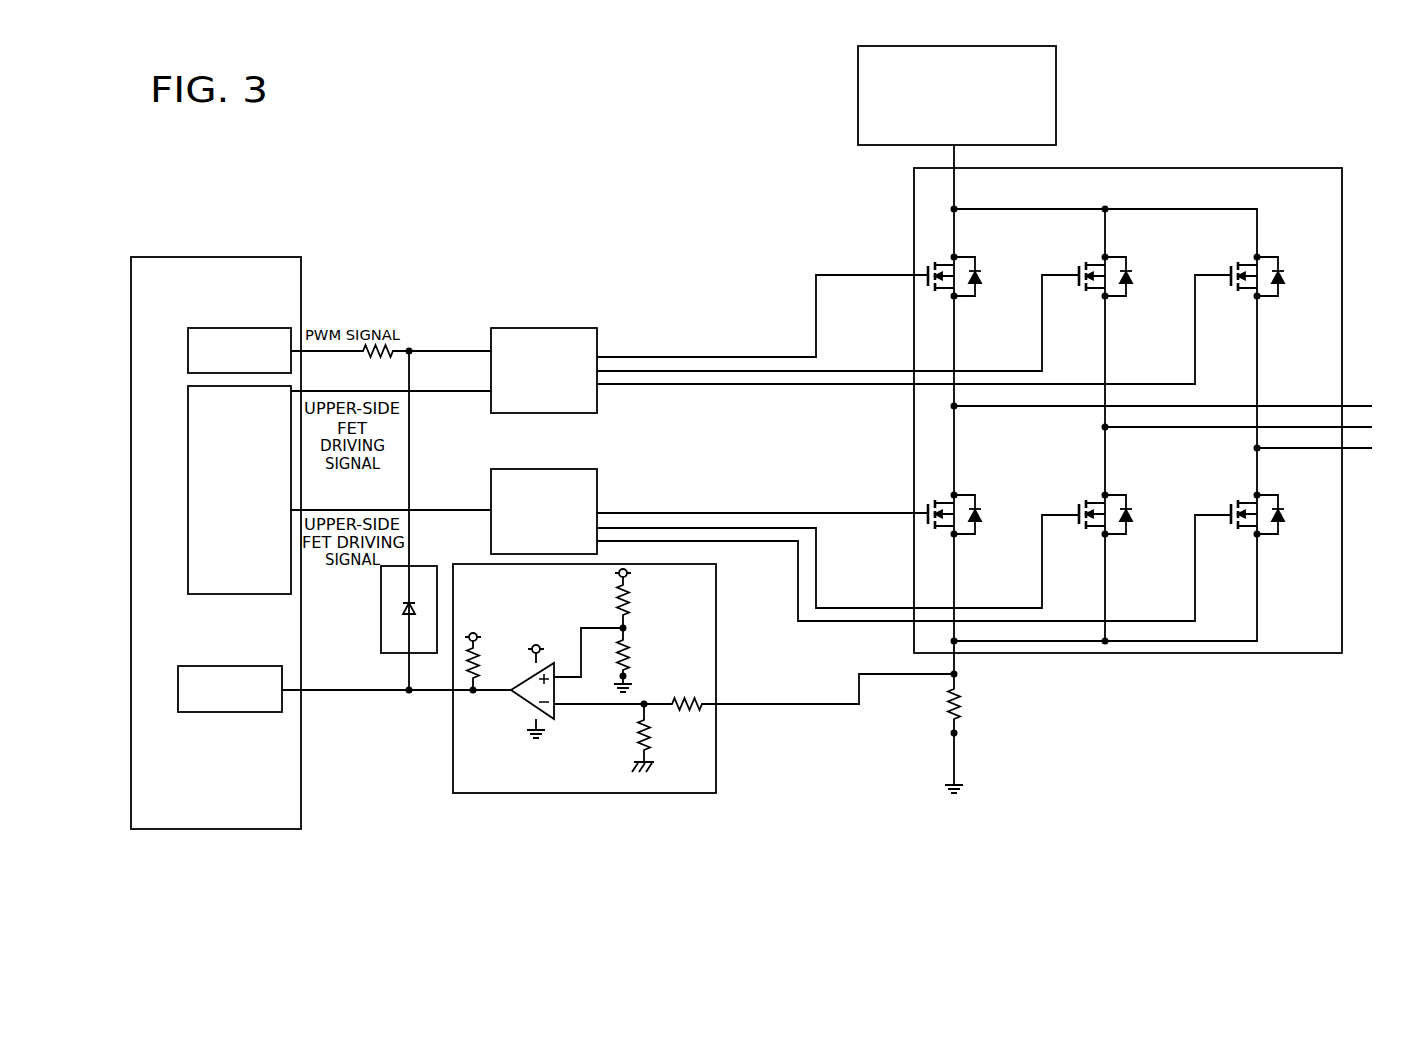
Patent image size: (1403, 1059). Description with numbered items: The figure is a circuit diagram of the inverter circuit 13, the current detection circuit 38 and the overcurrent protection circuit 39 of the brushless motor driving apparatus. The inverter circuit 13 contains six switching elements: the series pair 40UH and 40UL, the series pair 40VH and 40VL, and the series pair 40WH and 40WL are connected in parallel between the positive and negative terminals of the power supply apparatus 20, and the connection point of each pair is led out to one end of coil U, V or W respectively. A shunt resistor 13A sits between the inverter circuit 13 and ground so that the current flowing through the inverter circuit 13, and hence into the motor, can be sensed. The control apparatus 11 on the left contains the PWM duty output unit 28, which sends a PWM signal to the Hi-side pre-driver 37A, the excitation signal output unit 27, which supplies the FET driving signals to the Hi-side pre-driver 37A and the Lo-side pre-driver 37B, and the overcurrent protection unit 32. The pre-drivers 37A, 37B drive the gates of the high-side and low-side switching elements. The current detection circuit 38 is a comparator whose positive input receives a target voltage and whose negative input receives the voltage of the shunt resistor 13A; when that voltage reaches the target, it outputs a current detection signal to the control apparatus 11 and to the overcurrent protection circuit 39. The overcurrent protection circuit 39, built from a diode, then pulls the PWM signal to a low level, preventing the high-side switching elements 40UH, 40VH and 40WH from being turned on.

The control apparatus 11 is at (284, 253).
The PWM duty output unit 28 is at (205, 328).
The excitation signal output unit 27 is at (188, 432).
The overcurrent protection unit 32 is at (200, 666).
The overcurrent protection circuit 39 is at (381, 628).
The Hi-side pre-driver 37A is at (597, 334).
The Lo-side pre-driver 37B is at (597, 484).
The current detection circuit 38 is at (716, 626).
The power supply apparatus 20 is at (1056, 93).
The inverter circuit 13 is at (1152, 369).
The shunt resistor 13A is at (945, 712).
The switching element 40UH is at (979, 263).
The switching element 40VH is at (1161, 246).
The switching element 40WH is at (1283, 263).
The switching element 40UL is at (969, 484).
The switching element 40VL is at (1119, 488).
The switching element 40WL is at (1283, 506).